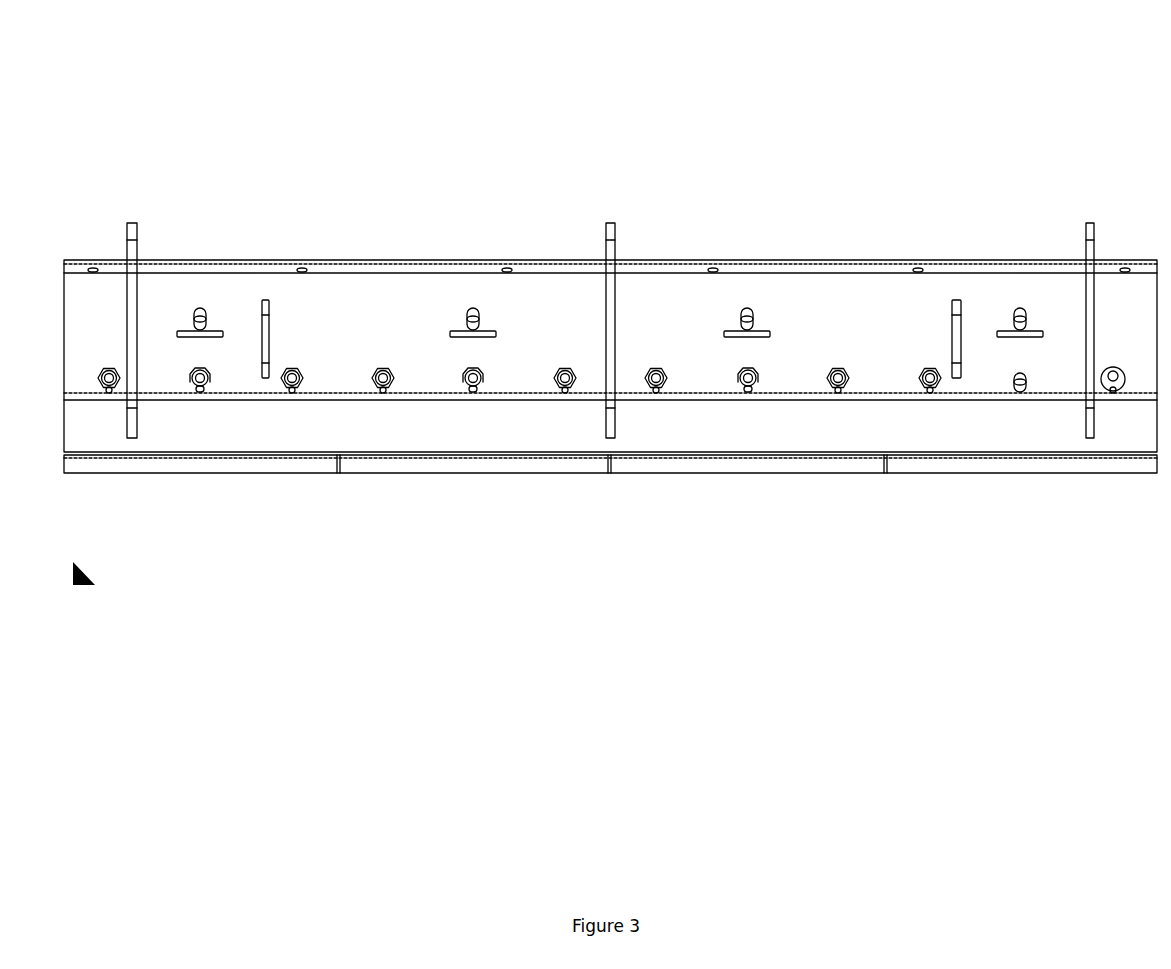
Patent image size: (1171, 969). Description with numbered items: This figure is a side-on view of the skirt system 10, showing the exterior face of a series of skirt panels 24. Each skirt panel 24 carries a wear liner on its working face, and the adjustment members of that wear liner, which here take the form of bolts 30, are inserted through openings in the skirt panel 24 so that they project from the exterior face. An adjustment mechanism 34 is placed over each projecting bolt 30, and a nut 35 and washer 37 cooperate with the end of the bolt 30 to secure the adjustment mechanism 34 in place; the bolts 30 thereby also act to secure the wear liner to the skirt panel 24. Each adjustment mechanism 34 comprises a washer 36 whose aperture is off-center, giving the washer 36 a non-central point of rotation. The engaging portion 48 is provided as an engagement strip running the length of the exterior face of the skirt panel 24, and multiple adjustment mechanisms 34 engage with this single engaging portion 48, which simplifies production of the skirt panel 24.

The skirt system 10 is at (578, 118).
The skirt panel 24 is at (610, 221).
The bolt 30 is at (544, 457).
The adjustment mechanism 34 is at (491, 316).
The nut 35 is at (109, 378).
The washer 36 is at (109, 383).
The washer 37 is at (109, 378).
The engaging portion 48 is at (222, 398).